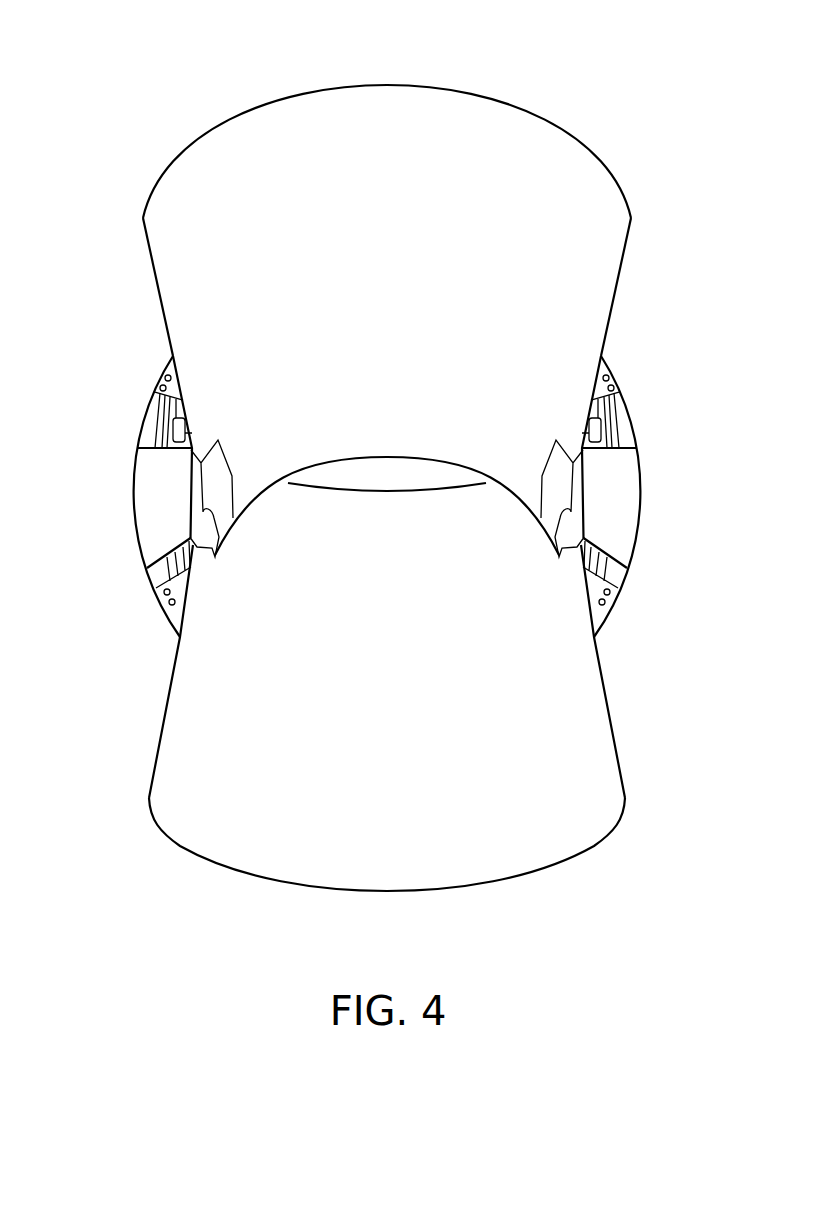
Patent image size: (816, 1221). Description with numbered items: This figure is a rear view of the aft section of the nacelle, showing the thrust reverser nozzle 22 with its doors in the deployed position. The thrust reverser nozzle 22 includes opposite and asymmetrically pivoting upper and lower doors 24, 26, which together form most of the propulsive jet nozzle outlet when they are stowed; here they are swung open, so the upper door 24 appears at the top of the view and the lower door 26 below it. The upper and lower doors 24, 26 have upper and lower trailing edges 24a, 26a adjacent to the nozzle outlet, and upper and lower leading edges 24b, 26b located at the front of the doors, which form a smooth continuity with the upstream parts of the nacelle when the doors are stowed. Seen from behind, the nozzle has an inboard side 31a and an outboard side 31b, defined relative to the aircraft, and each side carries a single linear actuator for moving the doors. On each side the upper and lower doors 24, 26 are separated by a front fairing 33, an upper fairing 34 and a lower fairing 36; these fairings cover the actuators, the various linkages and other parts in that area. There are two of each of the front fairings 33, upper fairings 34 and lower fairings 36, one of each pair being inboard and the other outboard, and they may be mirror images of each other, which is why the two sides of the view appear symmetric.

The thrust reverser nozzle 22 is at (427, 491).
The upper door 24 is at (432, 104).
The upper trailing edge 24a is at (372, 458).
The upper leading edge 24b is at (370, 83).
The lower door 26 is at (373, 797).
The lower trailing edge 26a is at (397, 488).
The lower leading edge 26b is at (400, 893).
The inboard side 31a is at (118, 483).
The outboard side 31b is at (656, 482).
The front fairing 33 is at (142, 497).
The upper fairing 34 is at (222, 489).
The lower fairing 36 is at (212, 546).